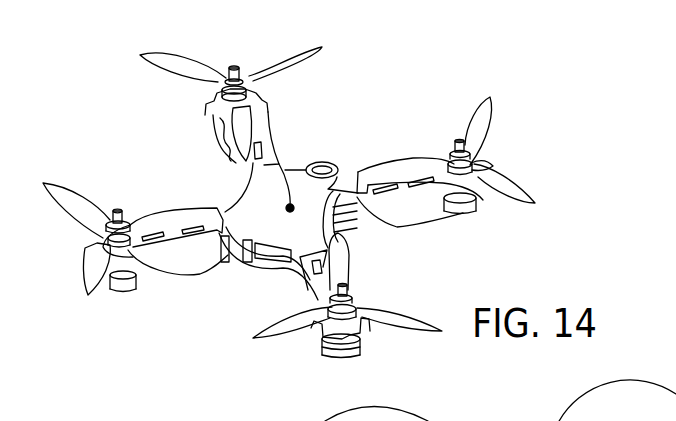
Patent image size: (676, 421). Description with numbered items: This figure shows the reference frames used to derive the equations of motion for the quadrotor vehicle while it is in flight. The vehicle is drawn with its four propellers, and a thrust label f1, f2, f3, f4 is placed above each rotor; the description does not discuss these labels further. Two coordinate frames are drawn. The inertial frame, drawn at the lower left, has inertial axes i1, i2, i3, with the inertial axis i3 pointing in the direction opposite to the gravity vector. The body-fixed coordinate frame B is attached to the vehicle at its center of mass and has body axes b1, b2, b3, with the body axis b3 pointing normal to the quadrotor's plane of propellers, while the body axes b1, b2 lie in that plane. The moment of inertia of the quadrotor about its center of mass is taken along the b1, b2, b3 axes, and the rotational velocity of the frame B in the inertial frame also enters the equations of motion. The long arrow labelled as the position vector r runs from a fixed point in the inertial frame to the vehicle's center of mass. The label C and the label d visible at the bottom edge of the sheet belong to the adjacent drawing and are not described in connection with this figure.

The thrust force of rotor 1 f1 is at (340, 238).
The thrust force of rotor 2 f2 is at (458, 139).
The thrust force of rotor 3 f3 is at (235, 60).
The thrust force of rotor 4 f4 is at (113, 200).
The body frame axis b1 is at (417, 263).
The body frame axis b2 is at (290, 208).
The body frame axis b3 is at (290, 204).
The inertial frame axis i1 is at (45, 381).
The inertial frame axis i2 is at (56, 390).
The inertial frame axis i3 is at (45, 381).
The position vector r is at (288, 209).
The body-fixed coordinate frame B is at (241, 205).
The circle C is at (477, 408).
The distance d is at (567, 420).